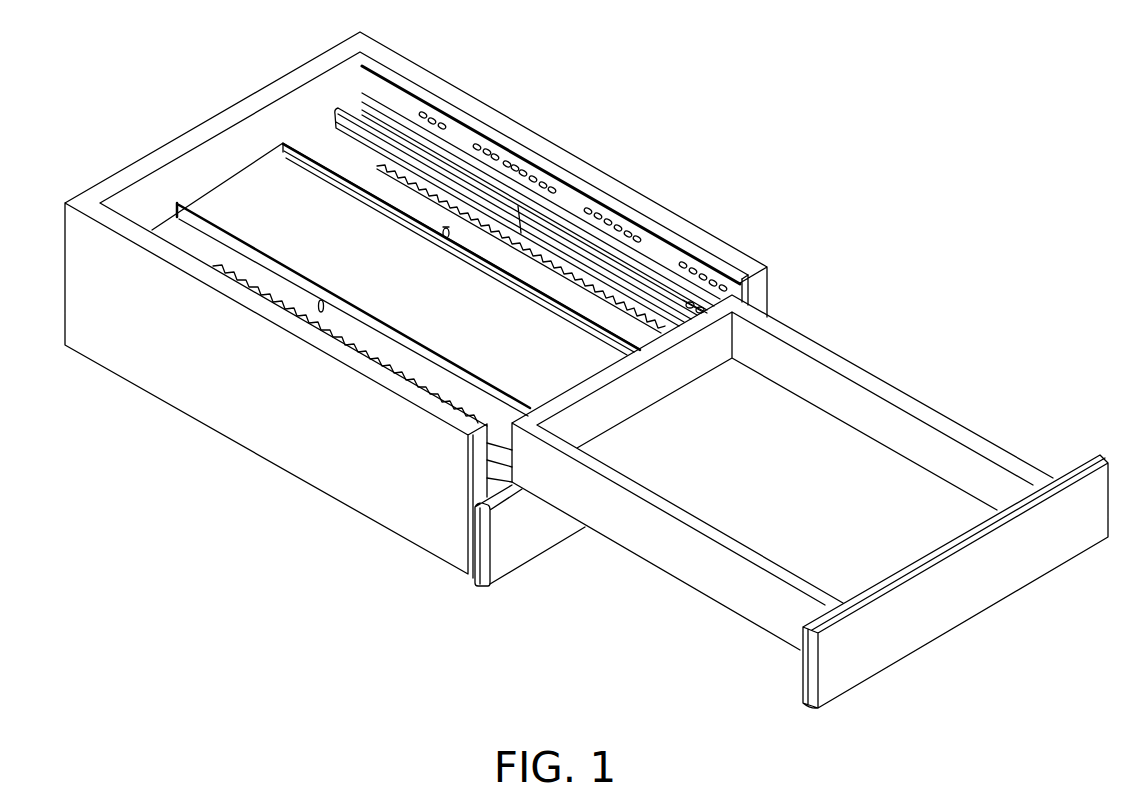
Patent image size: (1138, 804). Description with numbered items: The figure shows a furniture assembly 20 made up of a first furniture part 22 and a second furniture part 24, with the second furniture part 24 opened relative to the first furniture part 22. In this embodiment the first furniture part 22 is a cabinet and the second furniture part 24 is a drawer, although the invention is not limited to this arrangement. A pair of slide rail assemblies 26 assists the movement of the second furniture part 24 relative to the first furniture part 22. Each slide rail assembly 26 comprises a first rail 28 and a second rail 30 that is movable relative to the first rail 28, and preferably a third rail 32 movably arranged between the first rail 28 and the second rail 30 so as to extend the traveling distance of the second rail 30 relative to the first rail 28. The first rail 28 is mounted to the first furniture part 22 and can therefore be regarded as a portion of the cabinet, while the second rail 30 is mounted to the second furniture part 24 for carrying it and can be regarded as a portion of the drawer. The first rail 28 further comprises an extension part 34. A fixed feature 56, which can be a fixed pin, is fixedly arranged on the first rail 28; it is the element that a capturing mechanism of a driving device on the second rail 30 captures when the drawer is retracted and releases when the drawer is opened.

The furniture assembly 20 is at (658, 70).
The first furniture part 22 is at (463, 105).
The second furniture part 24 is at (885, 415).
The slide rail assembly 26 is at (577, 180).
The first rail 28 is at (402, 103).
The second rail 30 is at (713, 298).
The third rail 32 is at (593, 248).
The extension part 34 is at (333, 143).
The fixed feature 56 is at (447, 227).